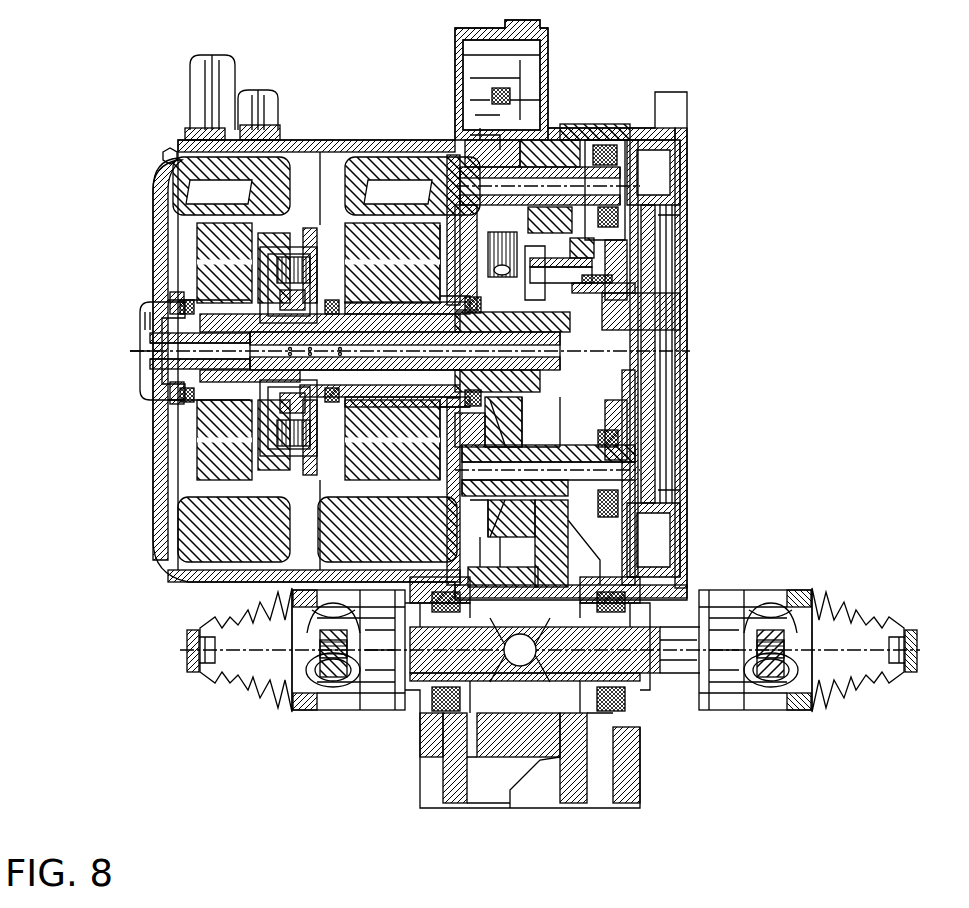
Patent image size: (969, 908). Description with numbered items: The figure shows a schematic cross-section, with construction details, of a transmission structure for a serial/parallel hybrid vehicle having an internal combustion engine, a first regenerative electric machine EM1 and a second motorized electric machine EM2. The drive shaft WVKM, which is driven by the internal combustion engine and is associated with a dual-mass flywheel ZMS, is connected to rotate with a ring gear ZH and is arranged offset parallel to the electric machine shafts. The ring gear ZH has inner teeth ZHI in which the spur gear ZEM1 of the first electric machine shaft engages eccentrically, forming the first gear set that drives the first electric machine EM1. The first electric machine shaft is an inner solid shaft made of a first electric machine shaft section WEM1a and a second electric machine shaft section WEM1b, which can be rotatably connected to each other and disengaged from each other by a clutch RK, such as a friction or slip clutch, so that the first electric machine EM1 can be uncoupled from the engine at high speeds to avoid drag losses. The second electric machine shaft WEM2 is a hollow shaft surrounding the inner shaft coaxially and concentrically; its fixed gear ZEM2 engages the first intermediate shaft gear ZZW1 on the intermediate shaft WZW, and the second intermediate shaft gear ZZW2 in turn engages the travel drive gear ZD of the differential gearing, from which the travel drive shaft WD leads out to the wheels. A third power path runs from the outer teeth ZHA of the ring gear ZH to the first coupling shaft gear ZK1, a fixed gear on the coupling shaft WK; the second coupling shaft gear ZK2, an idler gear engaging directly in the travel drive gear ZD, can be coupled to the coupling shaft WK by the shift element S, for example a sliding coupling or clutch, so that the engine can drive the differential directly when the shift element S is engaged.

The first electric machine EM1 is at (231, 359).
The second electric machine EM2 is at (399, 359).
The clutch RK is at (290, 271).
The first electric machine shaft section WEM1a is at (350, 345).
The second electric machine shaft section WEM1b is at (207, 327).
The second electric machine shaft WEM2 is at (460, 330).
The coupling shaft WK is at (612, 190).
The shift element S is at (520, 152).
The first coupling shaft gear ZK1 is at (585, 136).
The second coupling shaft gear ZK2 is at (552, 153).
The dual-mass flywheel ZMS is at (684, 160).
The outer teeth ZHA is at (583, 247).
The ring gear ZH is at (568, 273).
The inner teeth ZHI is at (540, 276).
The drive shaft WVKM is at (622, 317).
The spur gear of the first electric machine shaft ZEM1 is at (545, 337).
The gear of the second electric machine shaft ZEM2 is at (508, 387).
The first intermediate shaft gear ZZW1 is at (500, 418).
The intermediate shaft WZW is at (612, 468).
The second intermediate shaft gear ZZW2 is at (550, 493).
The travel drive gear ZD is at (552, 525).
The travel drive shaft WD is at (661, 656).